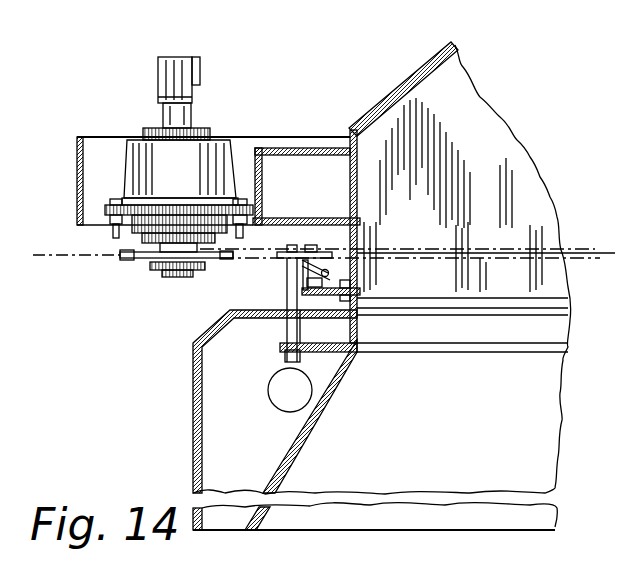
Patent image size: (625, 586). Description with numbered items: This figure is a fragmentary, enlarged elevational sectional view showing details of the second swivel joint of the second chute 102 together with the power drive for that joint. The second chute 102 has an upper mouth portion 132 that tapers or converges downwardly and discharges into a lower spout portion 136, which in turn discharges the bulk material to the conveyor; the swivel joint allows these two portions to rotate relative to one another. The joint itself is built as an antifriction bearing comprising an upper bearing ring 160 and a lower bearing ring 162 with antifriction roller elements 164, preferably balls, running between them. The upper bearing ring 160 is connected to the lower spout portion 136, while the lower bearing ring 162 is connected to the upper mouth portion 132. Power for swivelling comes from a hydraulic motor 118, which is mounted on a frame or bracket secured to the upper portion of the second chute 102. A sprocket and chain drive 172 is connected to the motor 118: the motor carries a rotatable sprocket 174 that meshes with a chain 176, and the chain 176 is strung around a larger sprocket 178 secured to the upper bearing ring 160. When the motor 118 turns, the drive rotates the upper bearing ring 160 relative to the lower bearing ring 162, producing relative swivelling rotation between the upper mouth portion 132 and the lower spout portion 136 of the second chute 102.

The second chute 102 is at (400, 84).
The hydraulic motor 118 is at (124, 162).
The upper mouth portion 132 is at (378, 118).
The lower spout portion 136 is at (280, 460).
The upper bearing ring 160 is at (352, 253).
The lower bearing ring 162 is at (318, 275).
The antifriction roller elements 164 is at (328, 248).
The sprocket and chain drive 172 is at (100, 260).
The rotatable sprocket 174 is at (127, 262).
The chain 176 is at (233, 268).
The larger sprocket 178 is at (277, 253).